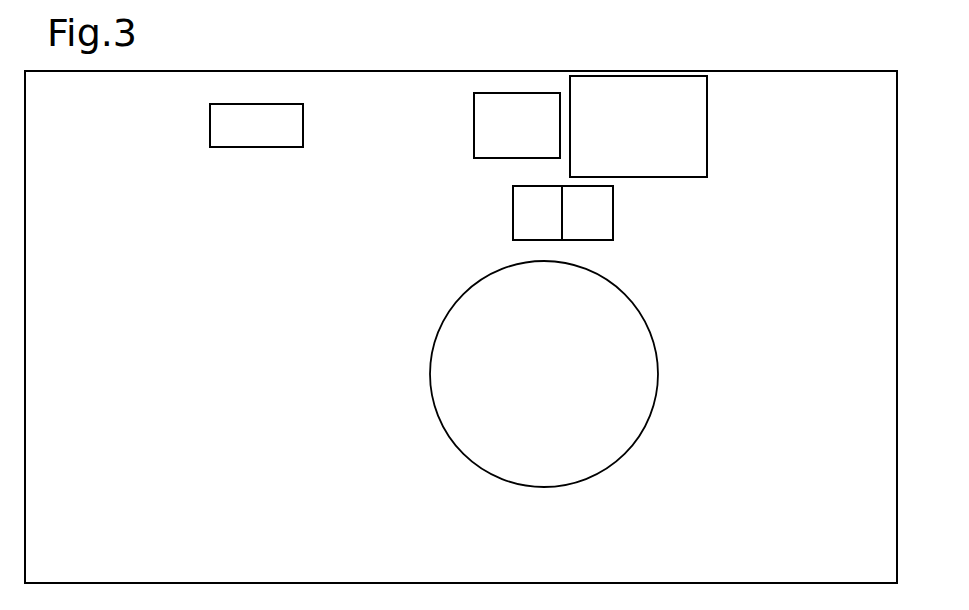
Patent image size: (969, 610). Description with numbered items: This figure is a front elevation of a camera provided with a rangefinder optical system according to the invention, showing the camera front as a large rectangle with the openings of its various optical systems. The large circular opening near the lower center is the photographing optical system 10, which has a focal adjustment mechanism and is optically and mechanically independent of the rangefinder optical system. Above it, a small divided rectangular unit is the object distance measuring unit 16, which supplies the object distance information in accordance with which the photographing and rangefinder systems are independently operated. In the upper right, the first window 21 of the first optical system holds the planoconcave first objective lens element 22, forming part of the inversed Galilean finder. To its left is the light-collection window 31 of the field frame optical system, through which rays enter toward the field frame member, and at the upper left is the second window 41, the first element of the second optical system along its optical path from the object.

The photographing optical system 10 is at (631, 446).
The object distance measuring unit 16 is at (513, 222).
The first window 21 is at (700, 138).
The first objective lens element 22 is at (682, 167).
The light-collection window 31 is at (478, 118).
The second window 41 is at (218, 148).